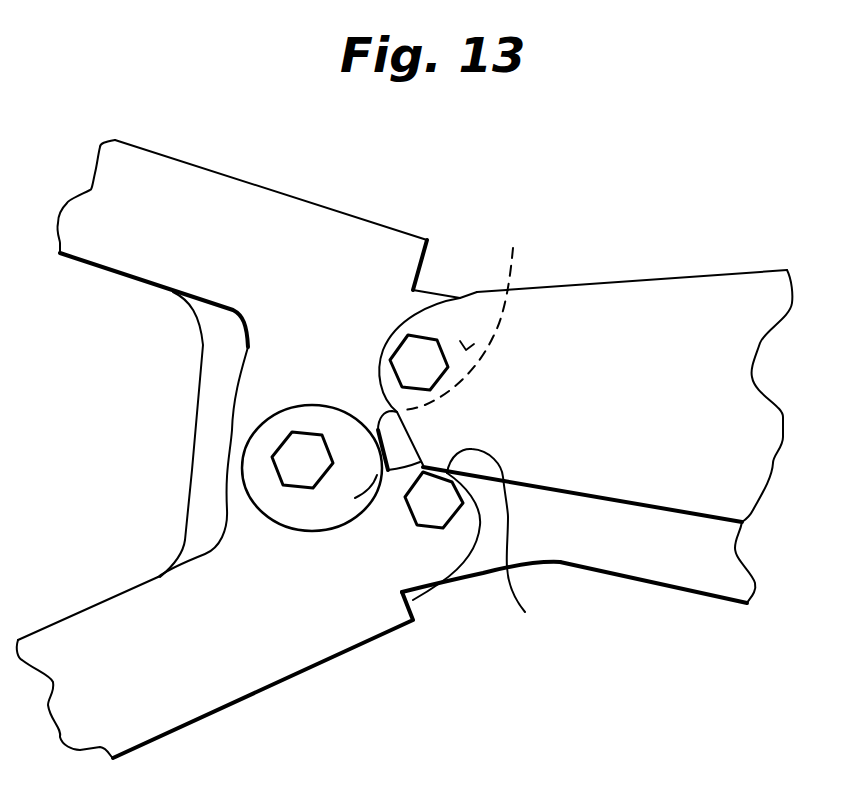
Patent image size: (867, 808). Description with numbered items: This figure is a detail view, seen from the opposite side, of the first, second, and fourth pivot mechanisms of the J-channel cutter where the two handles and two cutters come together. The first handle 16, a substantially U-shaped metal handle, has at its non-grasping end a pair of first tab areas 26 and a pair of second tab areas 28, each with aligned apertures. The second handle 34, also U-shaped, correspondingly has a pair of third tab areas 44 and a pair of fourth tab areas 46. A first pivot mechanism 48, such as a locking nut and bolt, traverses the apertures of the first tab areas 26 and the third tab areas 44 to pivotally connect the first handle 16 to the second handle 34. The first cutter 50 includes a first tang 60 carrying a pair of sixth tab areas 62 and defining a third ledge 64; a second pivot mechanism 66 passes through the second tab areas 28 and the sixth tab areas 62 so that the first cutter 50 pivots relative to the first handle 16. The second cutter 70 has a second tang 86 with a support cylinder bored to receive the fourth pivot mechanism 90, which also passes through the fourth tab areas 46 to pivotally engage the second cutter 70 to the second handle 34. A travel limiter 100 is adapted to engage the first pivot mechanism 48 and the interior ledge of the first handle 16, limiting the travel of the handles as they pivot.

The first handle 16 is at (233, 200).
The second tab areas 28 is at (408, 308).
The second pivot mechanism 66 is at (427, 350).
The sixth tab areas 62 is at (472, 311).
The first cutter 50 is at (558, 340).
The third ledge 64 is at (582, 430).
The first tang 60 is at (550, 409).
The second cutter 70 is at (688, 564).
The travel limiter 100 is at (220, 339).
The first tab areas 26 is at (252, 395).
The first pivot mechanism 48 is at (297, 462).
The third tab areas 44 is at (243, 495).
The second handle 34 is at (303, 653).
The fourth tab areas 46 is at (438, 553).
The fourth pivot mechanism 90 is at (442, 505).
The second tang 86 is at (577, 527).